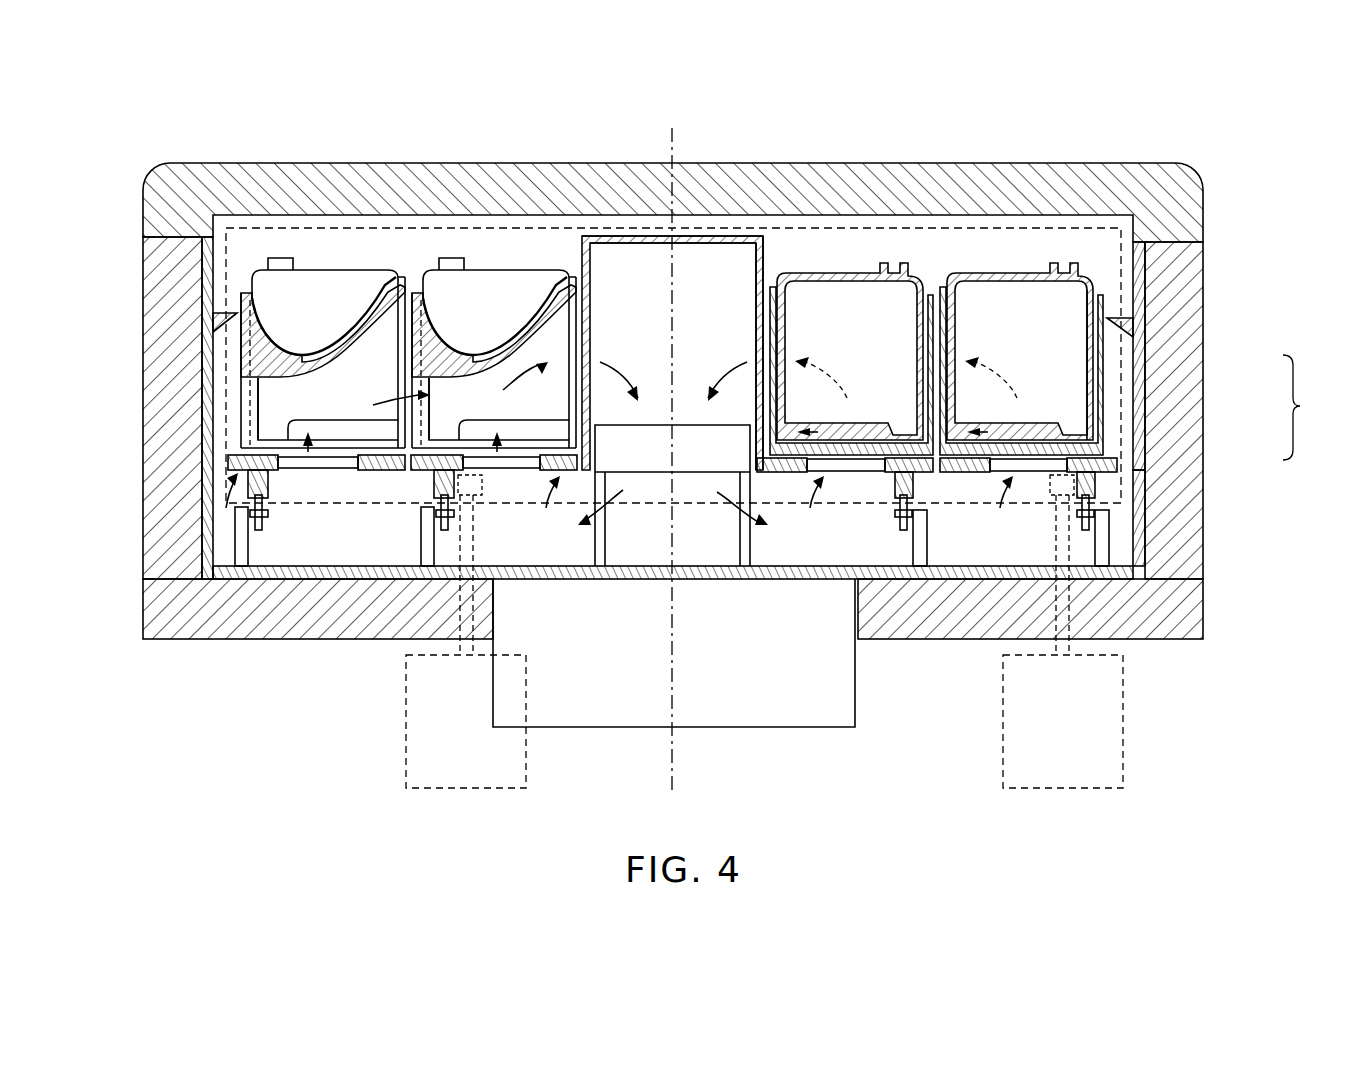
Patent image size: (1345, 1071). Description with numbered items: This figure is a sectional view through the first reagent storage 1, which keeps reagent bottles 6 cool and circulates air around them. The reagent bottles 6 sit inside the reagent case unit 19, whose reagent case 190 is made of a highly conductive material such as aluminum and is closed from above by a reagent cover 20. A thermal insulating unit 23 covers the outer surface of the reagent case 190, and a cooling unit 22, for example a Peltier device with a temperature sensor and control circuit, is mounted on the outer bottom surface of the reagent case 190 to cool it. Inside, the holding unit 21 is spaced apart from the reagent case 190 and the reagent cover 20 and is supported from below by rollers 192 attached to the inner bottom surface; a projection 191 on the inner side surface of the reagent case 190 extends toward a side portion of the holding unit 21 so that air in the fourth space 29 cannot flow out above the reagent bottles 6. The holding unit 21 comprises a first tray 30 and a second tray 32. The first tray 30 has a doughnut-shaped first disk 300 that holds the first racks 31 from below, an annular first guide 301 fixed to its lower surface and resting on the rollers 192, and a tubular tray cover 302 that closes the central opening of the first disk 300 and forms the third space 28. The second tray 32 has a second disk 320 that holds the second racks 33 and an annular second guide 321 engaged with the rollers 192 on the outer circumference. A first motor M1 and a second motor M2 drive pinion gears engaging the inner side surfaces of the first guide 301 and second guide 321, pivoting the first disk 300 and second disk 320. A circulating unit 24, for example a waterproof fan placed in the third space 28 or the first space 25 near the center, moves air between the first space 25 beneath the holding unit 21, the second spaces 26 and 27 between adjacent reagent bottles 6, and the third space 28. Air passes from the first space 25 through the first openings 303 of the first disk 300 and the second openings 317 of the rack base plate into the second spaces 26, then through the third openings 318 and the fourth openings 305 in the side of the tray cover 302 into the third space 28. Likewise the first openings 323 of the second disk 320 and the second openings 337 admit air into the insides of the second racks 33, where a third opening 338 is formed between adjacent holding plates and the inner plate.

The first reagent storage 1 is at (690, 62).
The reagent bottles 6 is at (1133, 290).
The reagent case unit 19 is at (1307, 407).
The reagent case 190 is at (1140, 405).
The projection 191 is at (1140, 335).
The rollers 192 is at (1150, 473).
The reagent cover 20 is at (1155, 163).
The holding unit 21 is at (1137, 234).
The cooling unit 22 is at (842, 728).
The thermal insulating unit 23 is at (142, 252).
The circulating unit 24 is at (643, 452).
The first space 25 is at (213, 498).
The second space 26 is at (312, 445).
The second space 27 is at (283, 390).
The third space 28 is at (740, 263).
The fourth space 29 is at (250, 402).
The first tray 30 is at (563, 522).
The first disk 300 is at (780, 472).
The first guide 301 is at (372, 475).
The tray cover 302 is at (603, 260).
The first openings 303 is at (866, 440).
The fourth openings 305 is at (590, 333).
The first racks 31 is at (571, 258).
The second openings 317 is at (906, 472).
The third openings 318 is at (567, 332).
The second tray 32 is at (228, 566).
The second disk 320 is at (960, 450).
The second guide 321 is at (268, 502).
The first openings 323 is at (1010, 470).
The second racks 33 is at (401, 258).
The second openings 337 is at (1045, 445).
The third opening 338 is at (395, 335).
The first motor M1 is at (457, 788).
The second motor M2 is at (1032, 788).